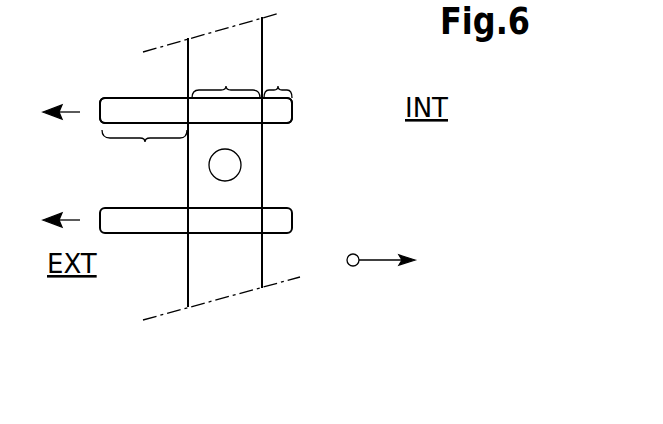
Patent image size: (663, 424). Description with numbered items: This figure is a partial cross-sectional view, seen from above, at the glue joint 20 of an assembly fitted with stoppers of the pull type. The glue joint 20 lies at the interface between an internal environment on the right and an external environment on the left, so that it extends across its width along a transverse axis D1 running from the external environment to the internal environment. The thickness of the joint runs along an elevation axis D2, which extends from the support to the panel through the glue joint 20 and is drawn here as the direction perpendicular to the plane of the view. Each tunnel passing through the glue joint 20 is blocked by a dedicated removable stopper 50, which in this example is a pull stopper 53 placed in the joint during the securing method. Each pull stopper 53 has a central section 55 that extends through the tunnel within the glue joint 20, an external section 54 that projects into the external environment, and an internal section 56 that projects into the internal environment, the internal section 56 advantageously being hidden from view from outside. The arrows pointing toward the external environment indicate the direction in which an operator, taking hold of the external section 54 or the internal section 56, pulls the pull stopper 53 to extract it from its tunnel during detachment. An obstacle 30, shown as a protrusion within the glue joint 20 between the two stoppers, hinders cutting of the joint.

The glue joint 20 is at (250, 40).
The removable stopper 50 is at (130, 108).
The pull stopper 53 is at (130, 108).
The external section 54 is at (144, 151).
The central section 55 is at (226, 78).
The internal section 56 is at (278, 78).
The obstacle 30 is at (230, 158).
The transverse axis D1 is at (398, 262).
The elevation axis D2 is at (348, 257).